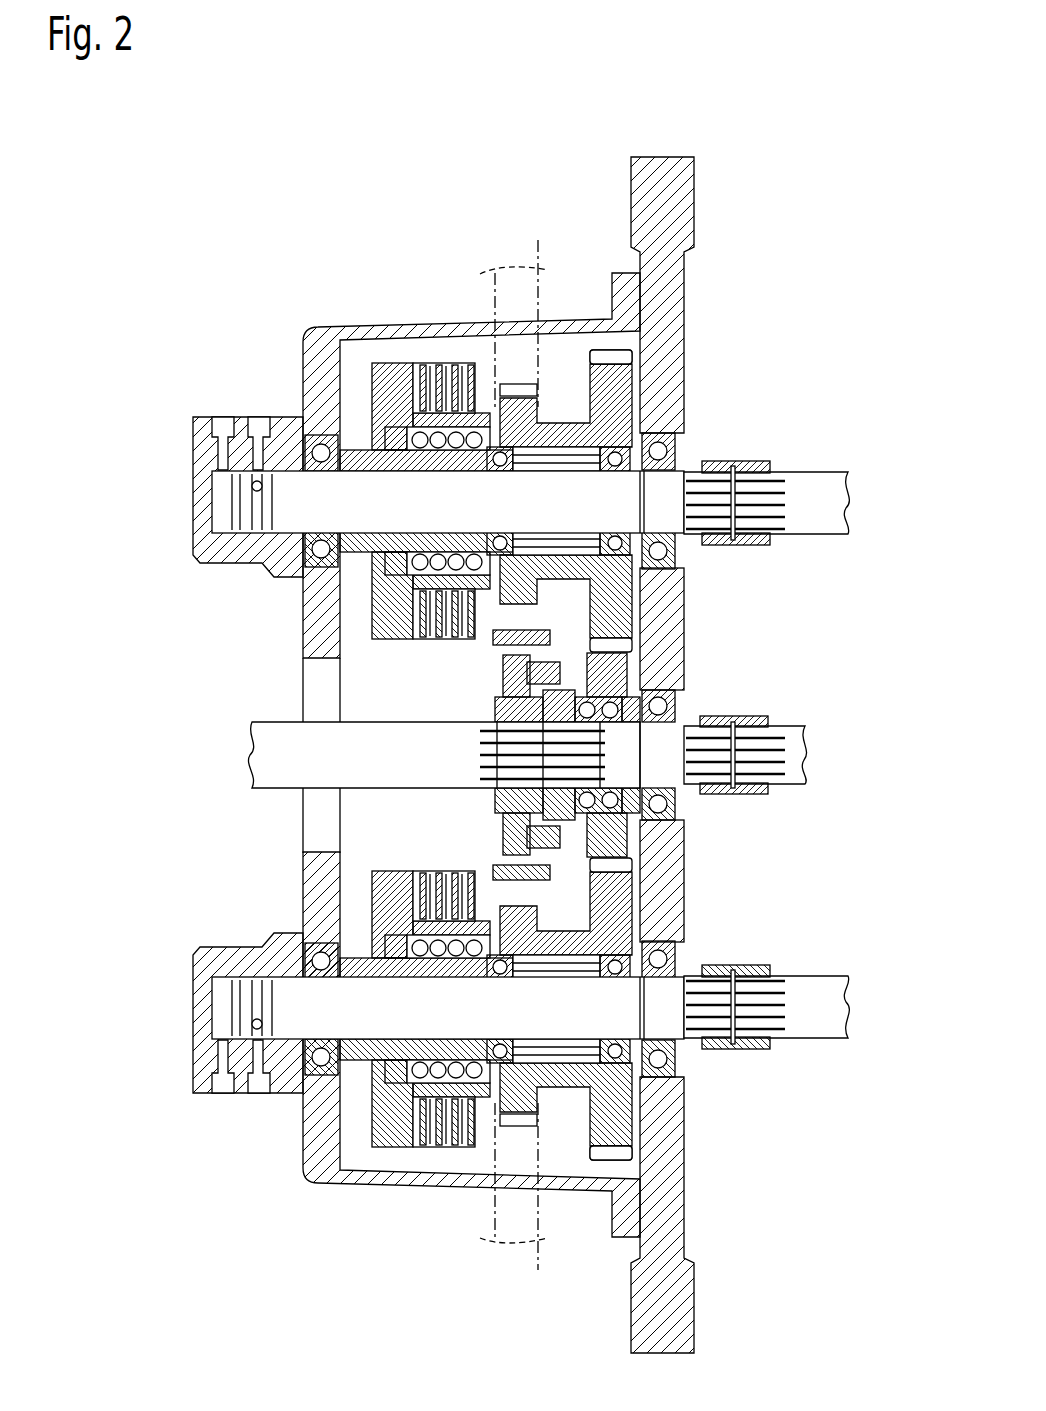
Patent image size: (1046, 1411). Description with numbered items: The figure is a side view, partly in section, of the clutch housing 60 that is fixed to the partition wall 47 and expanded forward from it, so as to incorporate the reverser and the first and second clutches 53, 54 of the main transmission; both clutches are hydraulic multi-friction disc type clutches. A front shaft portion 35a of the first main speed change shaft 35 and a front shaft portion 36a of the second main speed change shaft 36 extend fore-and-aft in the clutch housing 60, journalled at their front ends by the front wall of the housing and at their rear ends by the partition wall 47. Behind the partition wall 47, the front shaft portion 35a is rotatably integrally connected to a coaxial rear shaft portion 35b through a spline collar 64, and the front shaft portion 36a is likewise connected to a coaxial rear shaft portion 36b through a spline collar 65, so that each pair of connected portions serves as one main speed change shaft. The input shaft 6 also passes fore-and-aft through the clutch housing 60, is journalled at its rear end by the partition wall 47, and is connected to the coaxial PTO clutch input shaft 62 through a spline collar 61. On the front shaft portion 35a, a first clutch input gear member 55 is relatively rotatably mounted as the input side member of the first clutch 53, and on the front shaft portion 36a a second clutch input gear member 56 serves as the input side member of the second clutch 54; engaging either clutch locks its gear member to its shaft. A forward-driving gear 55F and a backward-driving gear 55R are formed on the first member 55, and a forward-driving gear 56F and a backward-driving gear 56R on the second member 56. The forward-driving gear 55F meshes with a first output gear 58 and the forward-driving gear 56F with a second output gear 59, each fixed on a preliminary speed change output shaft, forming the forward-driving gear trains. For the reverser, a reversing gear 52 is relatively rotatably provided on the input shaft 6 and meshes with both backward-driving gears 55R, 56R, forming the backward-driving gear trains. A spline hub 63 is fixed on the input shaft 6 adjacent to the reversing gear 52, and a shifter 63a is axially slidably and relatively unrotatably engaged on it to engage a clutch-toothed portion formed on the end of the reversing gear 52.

The input shaft 6 is at (392, 774).
The first main speed change shaft 35 is at (474, 502).
The front shaft portion 35a is at (500, 522).
The rear shaft portion 35b is at (833, 522).
The second main speed change shaft 36 is at (474, 1007).
The front shaft portion 36a is at (500, 1032).
The rear shaft portion 36b is at (833, 1032).
The partition wall 47 is at (688, 1320).
The reversing gear 52 is at (608, 838).
The first clutch 53 is at (398, 348).
The second clutch 54 is at (392, 1156).
The first clutch input gear member 55 is at (563, 419).
The forward-driving gear 55F is at (513, 384).
The backward-driving gear 55R is at (608, 357).
The second clutch input gear member 56 is at (565, 1092).
The forward-driving gear 56F is at (513, 1126).
The backward-driving gear 56R is at (637, 1182).
The first output gear 58 is at (552, 268).
The second output gear 59 is at (548, 1232).
The clutch housing 60 is at (307, 326).
The spline collar 61 is at (748, 716).
The PTO clutch input shaft 62 is at (808, 748).
The spline hub 63 is at (505, 830).
The shifter 63a is at (553, 845).
The spline collar 64 is at (748, 461).
The spline collar 65 is at (748, 968).